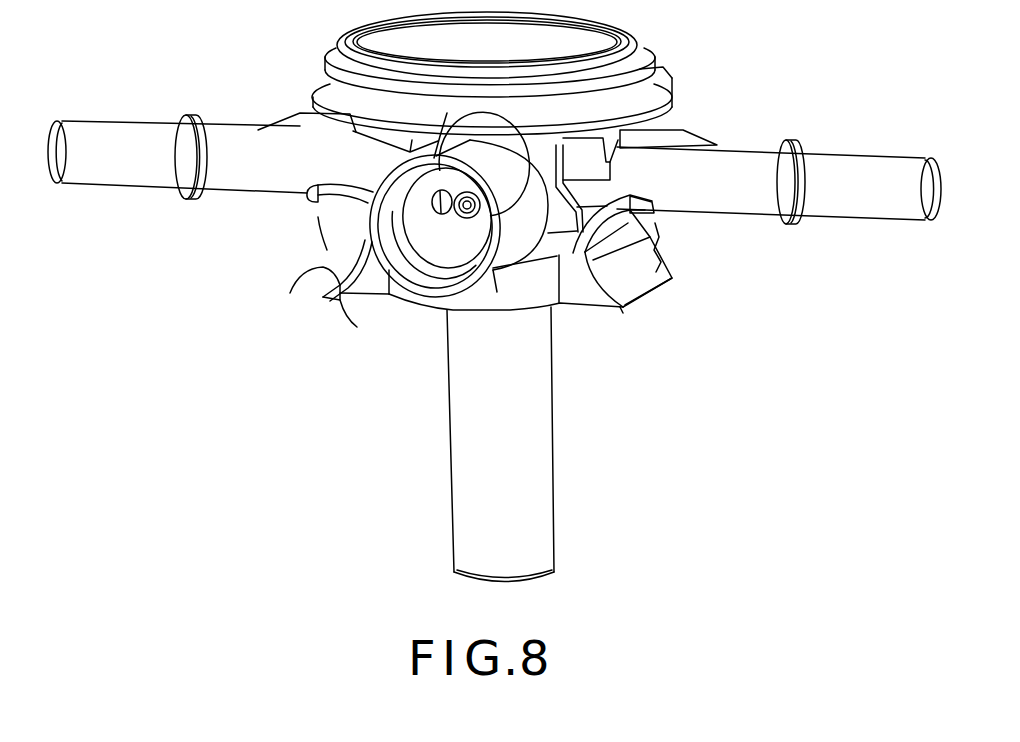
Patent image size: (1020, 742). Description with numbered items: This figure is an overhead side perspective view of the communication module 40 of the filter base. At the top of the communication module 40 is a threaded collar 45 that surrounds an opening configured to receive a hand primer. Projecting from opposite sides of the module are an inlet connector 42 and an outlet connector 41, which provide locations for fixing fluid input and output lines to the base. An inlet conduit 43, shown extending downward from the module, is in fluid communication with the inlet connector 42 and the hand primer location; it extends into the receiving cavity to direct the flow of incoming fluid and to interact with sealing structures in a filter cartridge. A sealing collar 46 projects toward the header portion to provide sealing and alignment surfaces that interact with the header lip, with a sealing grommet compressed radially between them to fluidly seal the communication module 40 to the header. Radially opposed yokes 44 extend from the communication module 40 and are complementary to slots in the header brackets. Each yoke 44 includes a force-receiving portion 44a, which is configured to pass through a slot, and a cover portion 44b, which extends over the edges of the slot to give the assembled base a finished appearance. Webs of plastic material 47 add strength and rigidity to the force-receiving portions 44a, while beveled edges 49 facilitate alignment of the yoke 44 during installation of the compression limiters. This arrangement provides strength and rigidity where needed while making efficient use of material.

The communication module 40 is at (678, 60).
The outlet connector 41 is at (114, 121).
The inlet connector 42 is at (823, 152).
The inlet conduit 43 is at (553, 490).
The yoke 44 is at (317, 237).
The force-receiving portion 44a is at (323, 268).
The cover portion 44b is at (315, 209).
The threaded collar 45 is at (340, 54).
The sealing collar 46 is at (513, 295).
The web of plastic material 47 is at (583, 297).
The beveled edge 49 is at (338, 295).